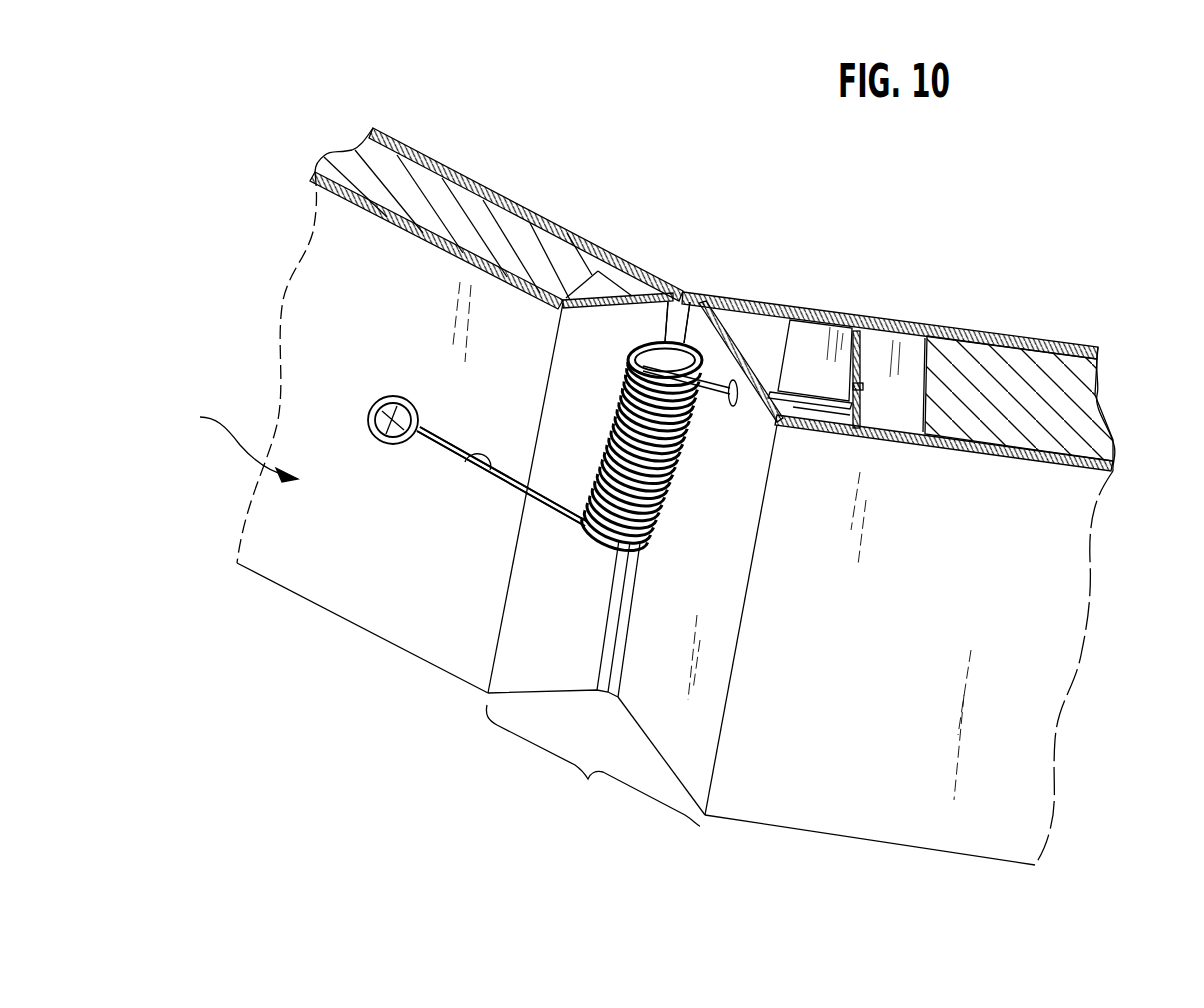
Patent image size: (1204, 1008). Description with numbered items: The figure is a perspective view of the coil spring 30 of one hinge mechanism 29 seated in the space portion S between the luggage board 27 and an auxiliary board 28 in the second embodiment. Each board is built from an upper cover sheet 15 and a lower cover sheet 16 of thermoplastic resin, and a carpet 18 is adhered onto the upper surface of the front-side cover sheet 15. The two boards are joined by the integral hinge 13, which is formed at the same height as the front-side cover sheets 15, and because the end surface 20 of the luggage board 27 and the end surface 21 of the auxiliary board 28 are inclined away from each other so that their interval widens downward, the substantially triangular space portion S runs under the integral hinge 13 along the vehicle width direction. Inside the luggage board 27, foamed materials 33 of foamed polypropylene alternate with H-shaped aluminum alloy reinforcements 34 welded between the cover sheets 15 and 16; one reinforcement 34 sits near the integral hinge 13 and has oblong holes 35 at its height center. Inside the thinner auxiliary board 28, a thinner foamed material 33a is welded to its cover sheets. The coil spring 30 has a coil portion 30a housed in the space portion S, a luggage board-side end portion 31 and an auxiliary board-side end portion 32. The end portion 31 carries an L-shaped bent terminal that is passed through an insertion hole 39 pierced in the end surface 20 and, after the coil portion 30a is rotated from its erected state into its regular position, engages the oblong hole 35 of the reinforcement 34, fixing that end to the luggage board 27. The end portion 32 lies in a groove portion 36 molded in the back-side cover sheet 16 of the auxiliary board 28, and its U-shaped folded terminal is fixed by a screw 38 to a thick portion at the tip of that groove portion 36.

The integral hinge 13 is at (670, 288).
The cover sheet on front surface side 15 is at (1097, 380).
The cover sheet on back surface side 16 is at (1085, 455).
The carpet 18 is at (1012, 330).
The end surface of luggage board 20 is at (700, 748).
The end surface of auxiliary board 21 is at (535, 629).
The luggage board 27 is at (1035, 707).
The auxiliary board 28 is at (240, 367).
The hinge mechanism 29 is at (727, 155).
The coil spring 30 is at (612, 432).
The coil portion 30a is at (662, 510).
The luggage board-side end portion 31 is at (742, 340).
The auxiliary board-side end portion 32 is at (553, 510).
The foamed material 33 is at (1080, 407).
The foamed material of auxiliary board 33a is at (360, 170).
The reinforcement 34 is at (820, 343).
The oblong hole 35 is at (863, 373).
The groove portion 36 is at (465, 462).
The screw 38 is at (403, 397).
The insertion hole 39 is at (728, 401).
The space portion S is at (593, 765).